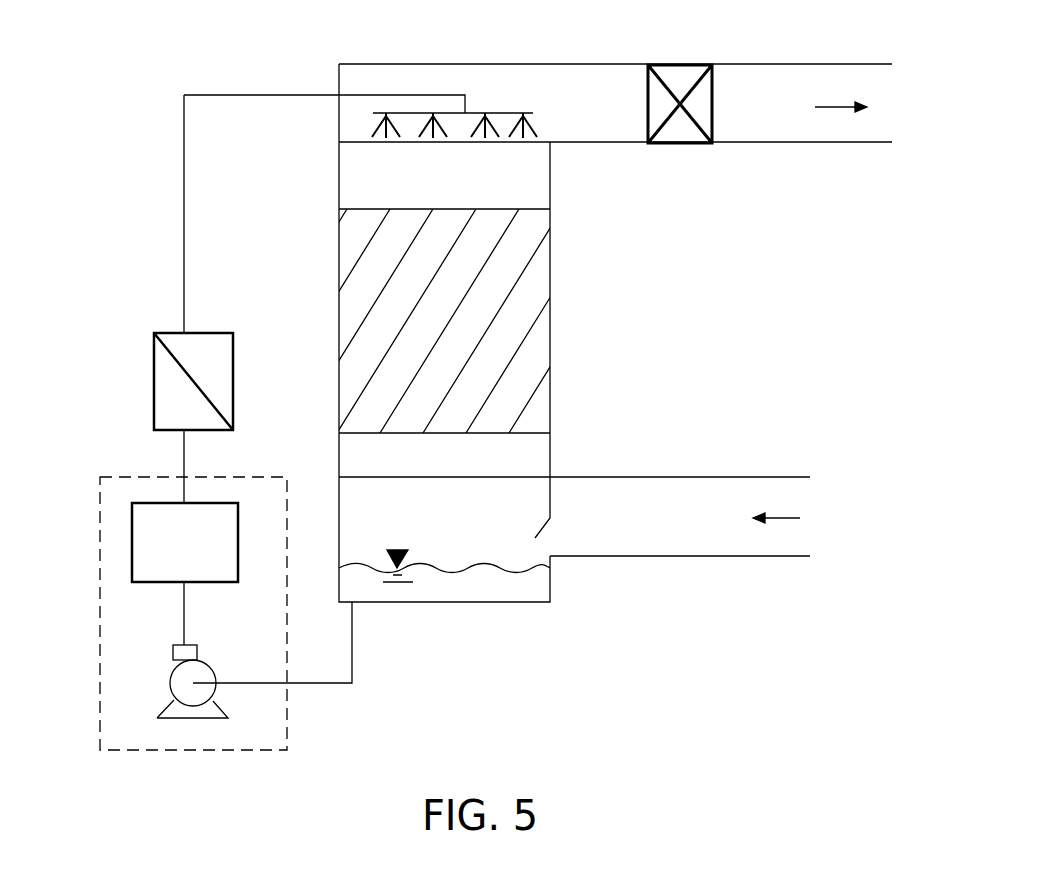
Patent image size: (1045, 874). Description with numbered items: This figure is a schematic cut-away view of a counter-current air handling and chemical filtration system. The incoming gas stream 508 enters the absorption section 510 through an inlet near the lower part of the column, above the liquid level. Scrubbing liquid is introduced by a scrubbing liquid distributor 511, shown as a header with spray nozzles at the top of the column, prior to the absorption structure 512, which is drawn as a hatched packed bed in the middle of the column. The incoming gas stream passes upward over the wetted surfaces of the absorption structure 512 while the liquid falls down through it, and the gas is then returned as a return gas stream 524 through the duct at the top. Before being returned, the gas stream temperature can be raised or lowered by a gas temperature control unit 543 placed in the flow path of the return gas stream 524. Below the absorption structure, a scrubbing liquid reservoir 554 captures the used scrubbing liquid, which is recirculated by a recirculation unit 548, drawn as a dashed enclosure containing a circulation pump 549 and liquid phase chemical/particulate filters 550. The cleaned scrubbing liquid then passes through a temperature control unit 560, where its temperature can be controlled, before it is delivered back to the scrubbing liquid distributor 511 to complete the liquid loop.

The incoming gas stream 508 is at (801, 519).
The absorption section 510 is at (756, 253).
The scrubbing liquid distributor 511 is at (493, 112).
The absorption structure 512 is at (550, 285).
The return gas stream 524 is at (867, 108).
The gas temperature control unit 543 is at (680, 65).
The recirculation unit 548 is at (100, 684).
The circulation pump 549 is at (166, 713).
The liquid phase chemical/particulate filters 550 is at (205, 556).
The scrubbing liquid reservoir 554 is at (502, 593).
The temperature control unit 560 is at (154, 378).